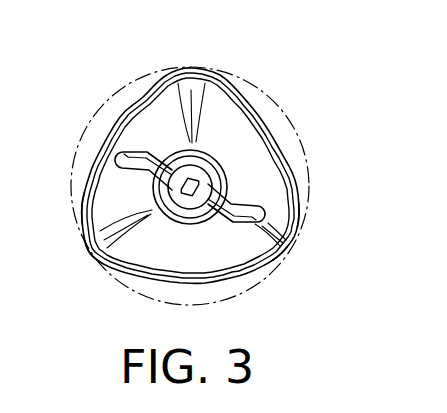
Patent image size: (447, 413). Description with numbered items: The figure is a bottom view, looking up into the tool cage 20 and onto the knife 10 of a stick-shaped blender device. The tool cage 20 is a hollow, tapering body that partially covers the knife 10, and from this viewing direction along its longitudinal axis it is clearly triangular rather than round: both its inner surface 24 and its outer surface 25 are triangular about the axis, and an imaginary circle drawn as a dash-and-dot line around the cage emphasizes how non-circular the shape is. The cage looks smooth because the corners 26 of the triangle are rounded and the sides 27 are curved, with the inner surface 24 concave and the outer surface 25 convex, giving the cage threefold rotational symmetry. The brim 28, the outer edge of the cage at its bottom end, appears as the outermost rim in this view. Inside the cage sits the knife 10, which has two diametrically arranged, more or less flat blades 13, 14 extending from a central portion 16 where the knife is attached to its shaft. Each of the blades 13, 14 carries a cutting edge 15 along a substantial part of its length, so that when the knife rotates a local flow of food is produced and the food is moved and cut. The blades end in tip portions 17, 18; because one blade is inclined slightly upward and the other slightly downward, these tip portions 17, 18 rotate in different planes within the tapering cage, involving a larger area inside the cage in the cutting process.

The knife 10 is at (228, 168).
The blade 13 is at (151, 151).
The blade 14 is at (232, 198).
The cutting edge 15 is at (247, 237).
The central portion 16 is at (200, 170).
The tip portion 17 is at (117, 158).
The tip portion 18 is at (298, 215).
The tool cage 20 is at (202, 70).
The inner surface 24 is at (288, 252).
The outer surface 25 is at (145, 92).
The corners 26 is at (93, 250).
The sides 27 is at (273, 124).
The brim 28 is at (83, 208).